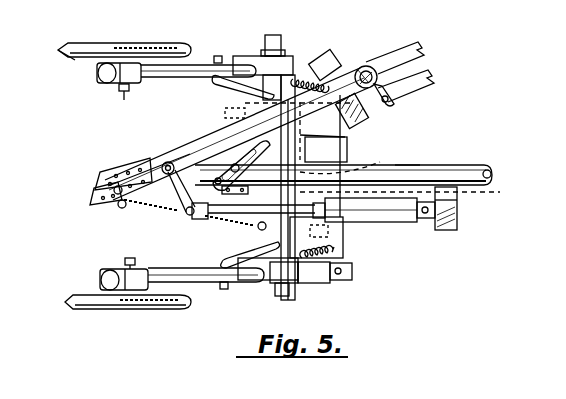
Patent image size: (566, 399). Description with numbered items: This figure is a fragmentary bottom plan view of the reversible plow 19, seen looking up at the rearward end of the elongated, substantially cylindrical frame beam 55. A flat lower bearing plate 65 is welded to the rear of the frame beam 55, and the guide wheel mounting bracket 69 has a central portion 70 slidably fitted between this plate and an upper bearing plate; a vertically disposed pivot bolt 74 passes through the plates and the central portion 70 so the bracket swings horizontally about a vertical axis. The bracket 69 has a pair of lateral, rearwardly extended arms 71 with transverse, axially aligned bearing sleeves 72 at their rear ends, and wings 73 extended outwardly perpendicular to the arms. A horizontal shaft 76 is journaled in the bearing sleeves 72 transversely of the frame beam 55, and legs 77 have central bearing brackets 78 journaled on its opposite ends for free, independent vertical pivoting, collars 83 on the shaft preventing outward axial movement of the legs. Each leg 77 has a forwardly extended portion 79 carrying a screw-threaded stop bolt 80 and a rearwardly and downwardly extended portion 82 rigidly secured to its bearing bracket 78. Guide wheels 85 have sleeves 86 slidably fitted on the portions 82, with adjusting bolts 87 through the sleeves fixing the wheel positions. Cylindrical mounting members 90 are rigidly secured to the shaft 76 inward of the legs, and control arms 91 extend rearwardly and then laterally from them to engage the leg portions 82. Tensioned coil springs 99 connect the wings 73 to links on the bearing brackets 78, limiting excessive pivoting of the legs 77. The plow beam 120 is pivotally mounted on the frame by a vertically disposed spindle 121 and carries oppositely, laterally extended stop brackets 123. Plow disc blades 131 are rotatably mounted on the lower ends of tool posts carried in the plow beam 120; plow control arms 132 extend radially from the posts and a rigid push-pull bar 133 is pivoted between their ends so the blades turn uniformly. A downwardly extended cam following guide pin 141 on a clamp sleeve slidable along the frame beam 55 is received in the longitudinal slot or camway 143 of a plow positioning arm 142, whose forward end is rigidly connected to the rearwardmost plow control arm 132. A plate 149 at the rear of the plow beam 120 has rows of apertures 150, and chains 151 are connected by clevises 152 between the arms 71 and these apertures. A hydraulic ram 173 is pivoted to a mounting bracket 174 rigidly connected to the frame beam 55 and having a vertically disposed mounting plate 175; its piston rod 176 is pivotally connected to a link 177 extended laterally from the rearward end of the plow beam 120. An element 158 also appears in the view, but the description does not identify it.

The reversible plow 19 is at (110, 128).
The frame beam 55 is at (493, 172).
The lower bearing plate 65 is at (348, 152).
The guide wheel mounting bracket 69 is at (343, 172).
The central portion 70 is at (405, 164).
The rearwardly extended arms 71 is at (314, 284).
The bearing sleeves 72 is at (276, 290).
The wings 73 is at (365, 118).
The pivot bolt 74 is at (326, 149).
The shaft 76 is at (273, 35).
The legs 77 is at (252, 56).
The central bearing brackets 78 is at (294, 60).
The forwardly extended portions 79 is at (325, 55).
The stop bolts 80 is at (344, 282).
The rearwardly and downwardly extended portions 82 is at (186, 43).
The collars 83 is at (263, 50).
The guide wheels 85 is at (70, 62).
The sleeves 86 is at (110, 82).
The adjusting bolts 87 is at (124, 100).
The cylindrical mounting members 90 is at (214, 84).
The control arms 91 is at (218, 56).
The tensioned coil springs 99 is at (262, 108).
The plow beam 120 is at (425, 50).
The spindle 121 is at (164, 160).
The stop brackets 123 is at (367, 66).
The plow disc blade 131 is at (79, 5).
The plow control arms 132 is at (395, 99).
The push-pull bar 133 is at (434, 78).
The cam following guide pin 141 is at (220, 160).
The plow positioning arm 142 is at (347, 137).
The slot or camway 143 is at (190, 152).
The plate 149 is at (95, 200).
The apertures 150 is at (112, 192).
The chains 151 is at (140, 170).
The clevises 152 is at (116, 186).
The link 158 is at (236, 262).
The hydraulic ram 173 is at (402, 212).
The mounting bracket 174 is at (452, 224).
The mounting plate 175 is at (457, 205).
The piston rod 176 is at (248, 230).
The link 177 is at (186, 216).